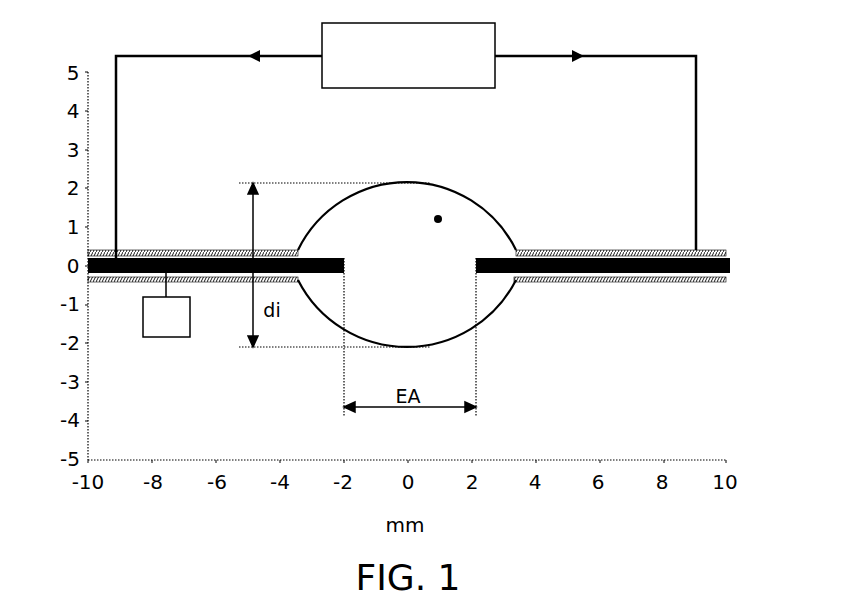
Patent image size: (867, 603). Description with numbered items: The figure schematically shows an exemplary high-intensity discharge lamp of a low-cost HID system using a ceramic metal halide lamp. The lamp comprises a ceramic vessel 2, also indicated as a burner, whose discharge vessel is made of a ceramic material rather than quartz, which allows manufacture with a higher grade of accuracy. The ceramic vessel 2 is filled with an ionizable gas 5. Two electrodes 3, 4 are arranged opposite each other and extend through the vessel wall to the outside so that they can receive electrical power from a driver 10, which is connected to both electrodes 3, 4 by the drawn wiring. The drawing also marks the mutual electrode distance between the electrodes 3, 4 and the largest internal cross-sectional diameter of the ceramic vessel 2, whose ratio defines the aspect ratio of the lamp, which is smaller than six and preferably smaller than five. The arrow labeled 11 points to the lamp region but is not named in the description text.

The ceramic vessel 2 is at (345, 203).
The electrode 3 is at (166, 305).
The electrode 4 is at (578, 276).
The ionizable gas 5 is at (438, 219).
The driver 10 is at (406, 140).
The electrowetting device region 11 is at (536, 173).